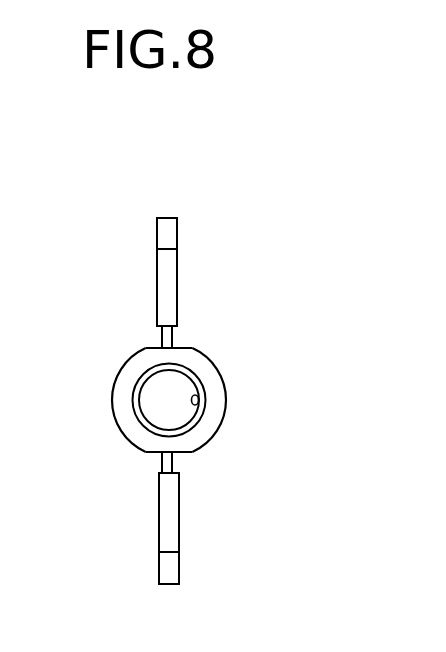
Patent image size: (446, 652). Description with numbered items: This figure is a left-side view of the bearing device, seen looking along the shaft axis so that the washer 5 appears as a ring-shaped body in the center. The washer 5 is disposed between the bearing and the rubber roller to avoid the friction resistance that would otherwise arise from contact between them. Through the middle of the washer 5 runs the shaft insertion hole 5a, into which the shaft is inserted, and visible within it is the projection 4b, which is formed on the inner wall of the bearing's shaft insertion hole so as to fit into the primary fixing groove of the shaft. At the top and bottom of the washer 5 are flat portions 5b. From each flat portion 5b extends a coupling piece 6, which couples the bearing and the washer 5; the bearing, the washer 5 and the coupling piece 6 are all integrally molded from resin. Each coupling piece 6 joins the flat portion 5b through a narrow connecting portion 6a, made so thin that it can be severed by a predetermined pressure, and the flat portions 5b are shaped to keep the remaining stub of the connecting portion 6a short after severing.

The washer 5 is at (128, 433).
The shaft insertion hole 5a is at (139, 368).
The flat portion 5b is at (184, 347).
The projection 4b is at (193, 399).
The coupling piece 6 is at (163, 218).
The connecting portion 6a is at (175, 341).